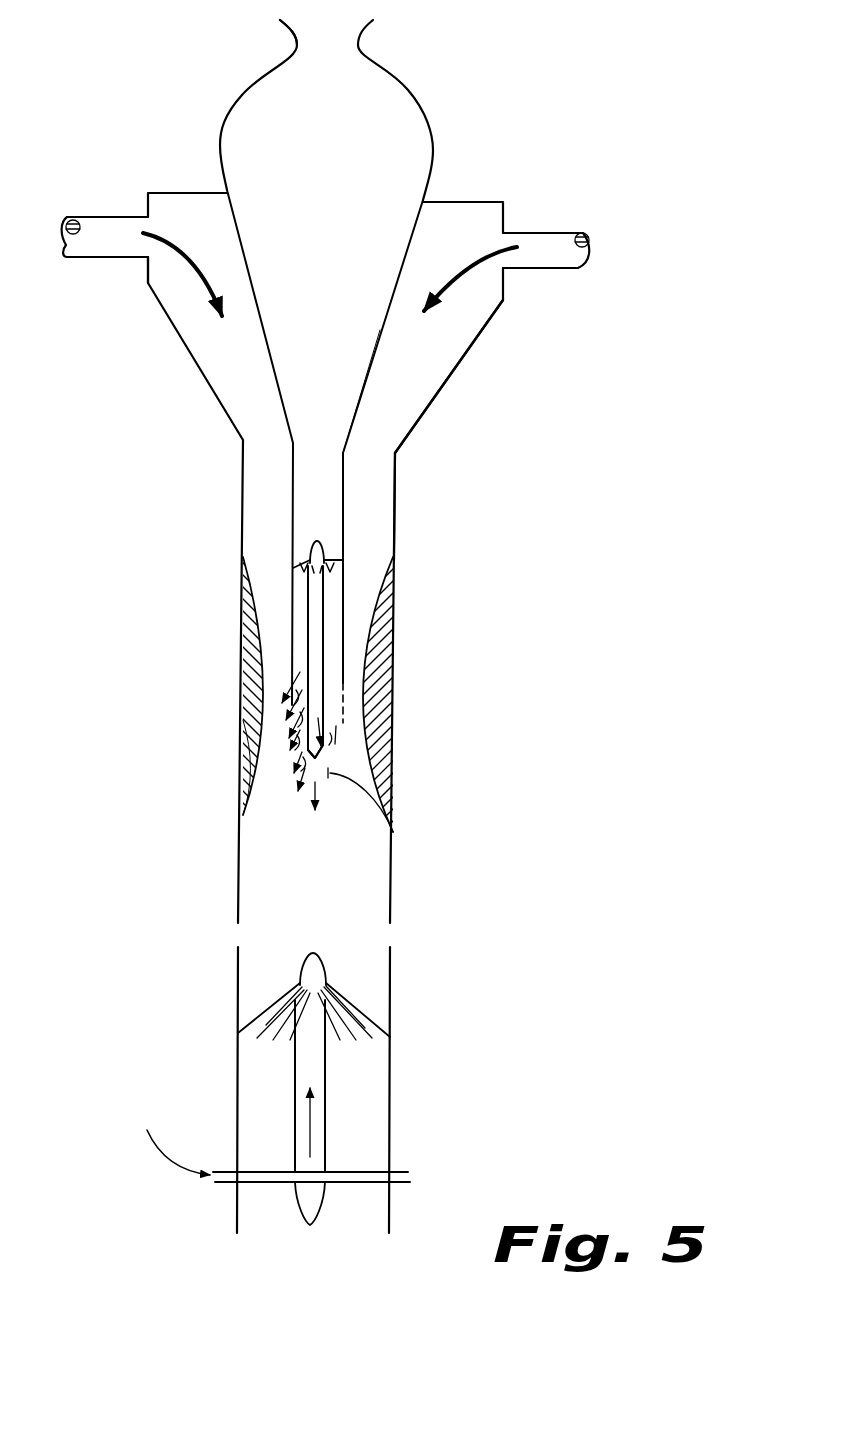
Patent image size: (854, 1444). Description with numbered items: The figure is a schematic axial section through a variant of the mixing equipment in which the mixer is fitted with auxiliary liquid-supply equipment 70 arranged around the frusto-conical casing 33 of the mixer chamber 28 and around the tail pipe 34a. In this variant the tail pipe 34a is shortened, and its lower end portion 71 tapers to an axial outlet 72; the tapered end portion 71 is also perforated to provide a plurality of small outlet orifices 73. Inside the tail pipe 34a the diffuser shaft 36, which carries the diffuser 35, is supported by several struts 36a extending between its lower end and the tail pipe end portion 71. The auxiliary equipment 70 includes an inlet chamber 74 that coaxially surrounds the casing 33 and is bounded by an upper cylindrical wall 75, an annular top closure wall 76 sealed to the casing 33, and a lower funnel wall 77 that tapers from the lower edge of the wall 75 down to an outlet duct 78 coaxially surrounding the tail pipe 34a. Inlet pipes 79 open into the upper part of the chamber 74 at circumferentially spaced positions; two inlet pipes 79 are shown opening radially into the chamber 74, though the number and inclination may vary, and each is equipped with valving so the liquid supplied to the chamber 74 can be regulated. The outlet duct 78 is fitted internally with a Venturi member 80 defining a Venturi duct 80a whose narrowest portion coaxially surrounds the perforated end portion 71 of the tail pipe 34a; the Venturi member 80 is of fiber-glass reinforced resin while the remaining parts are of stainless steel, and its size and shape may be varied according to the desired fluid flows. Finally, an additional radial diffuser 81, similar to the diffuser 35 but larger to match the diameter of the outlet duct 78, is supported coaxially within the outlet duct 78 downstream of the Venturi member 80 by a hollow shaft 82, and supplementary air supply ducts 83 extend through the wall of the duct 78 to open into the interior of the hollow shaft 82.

The mixer chamber 28 is at (374, 138).
The frusto-conical casing 33 is at (407, 82).
The tail pipe 34a is at (343, 523).
The diffuser 35 is at (330, 562).
The diffuser shaft 36 is at (324, 630).
The struts 36a is at (330, 738).
The auxiliary liquid-supply equipment 70 is at (177, 369).
The lower end portion 71 is at (333, 755).
The axial outlet 72 is at (320, 787).
The outlet orifices 73 is at (397, 797).
The inlet chamber 74 is at (434, 355).
The upper cylindrical wall 75 is at (147, 268).
The annular top closure wall 76 is at (473, 202).
The lower funnel wall 77 is at (480, 335).
The outlet duct 78 is at (397, 482).
The inlet pipes 79 is at (100, 217).
The Venturi member 80 is at (382, 727).
The Venturi duct 80a is at (277, 768).
The additional radial diffuser 81 is at (258, 1013).
The hollow shaft 82 is at (295, 1078).
The supplementary air supply ducts 83 is at (218, 1167).